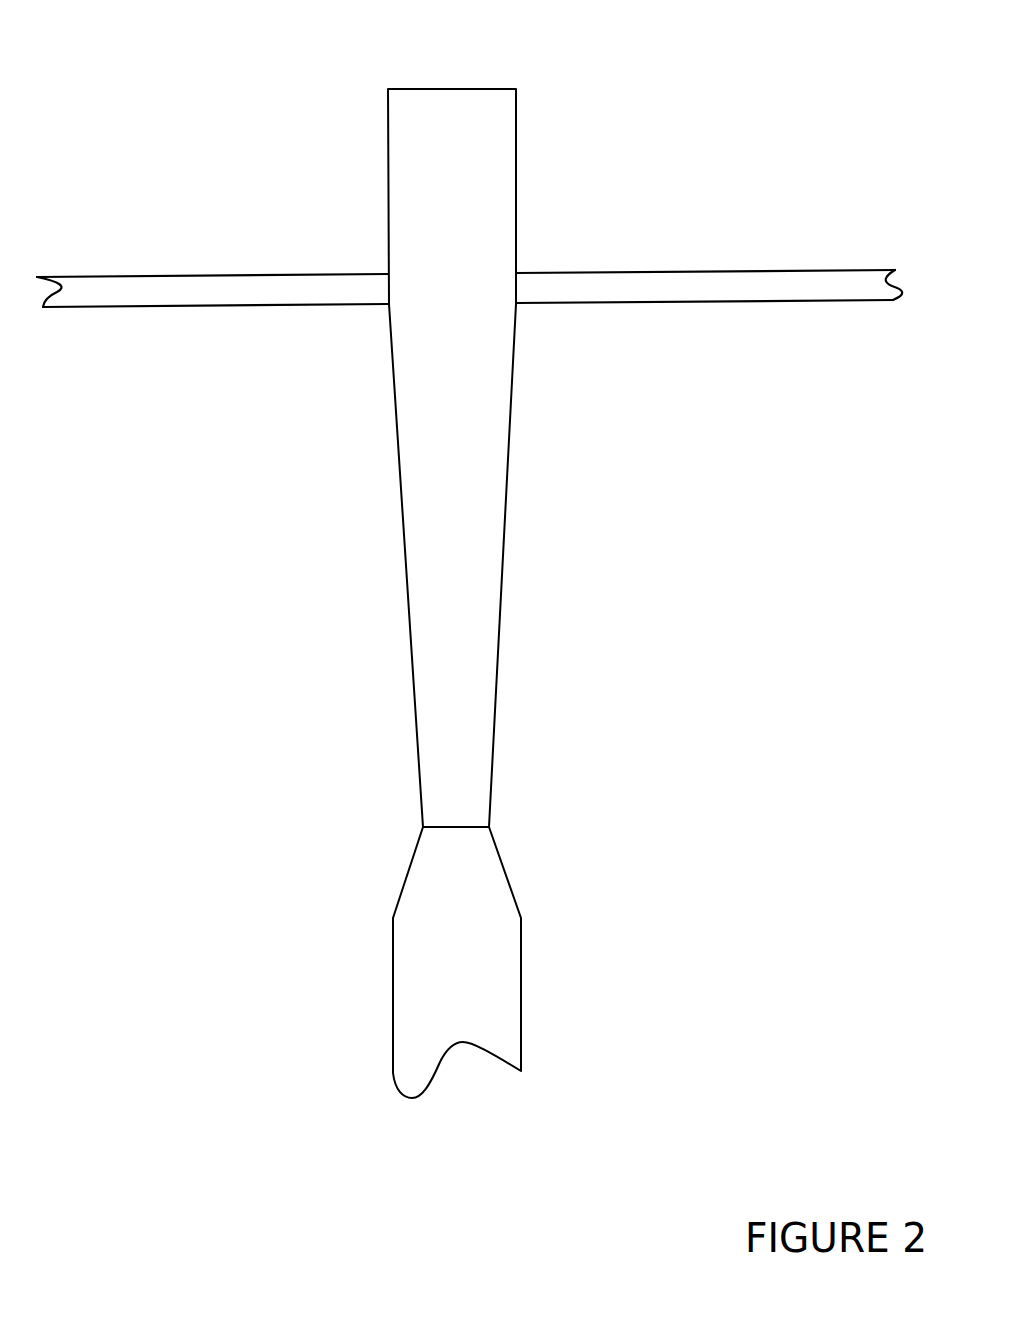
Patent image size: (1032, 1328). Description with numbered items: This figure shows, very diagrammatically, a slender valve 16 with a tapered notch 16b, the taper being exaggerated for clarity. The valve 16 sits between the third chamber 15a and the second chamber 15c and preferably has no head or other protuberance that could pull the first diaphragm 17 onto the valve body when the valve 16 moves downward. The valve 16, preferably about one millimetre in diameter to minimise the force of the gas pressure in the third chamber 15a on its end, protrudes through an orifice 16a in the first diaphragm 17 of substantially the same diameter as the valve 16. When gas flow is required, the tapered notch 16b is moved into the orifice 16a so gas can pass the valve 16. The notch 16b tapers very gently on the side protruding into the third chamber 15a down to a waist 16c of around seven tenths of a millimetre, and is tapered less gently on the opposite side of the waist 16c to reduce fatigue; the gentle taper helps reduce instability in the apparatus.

The third chamber 15a is at (340, 30).
The second chamber 15c is at (880, 805).
The valve 16 is at (551, 559).
The orifice 16a is at (516, 272).
The tapered notch 16b is at (497, 713).
The waist 16c is at (489, 827).
The first diaphragm 17 is at (705, 270).